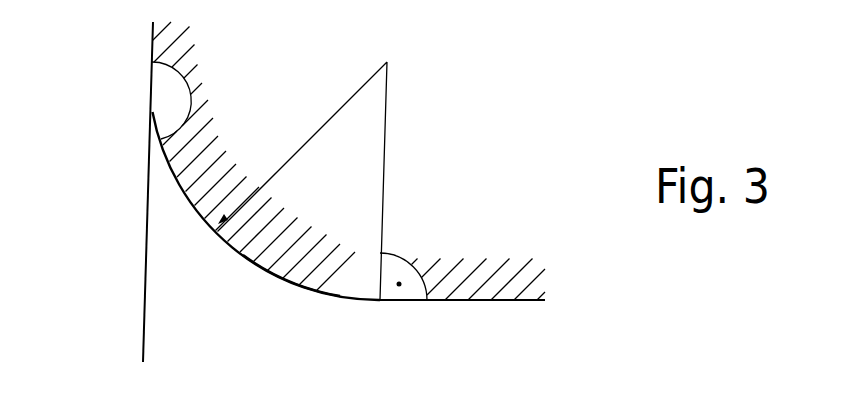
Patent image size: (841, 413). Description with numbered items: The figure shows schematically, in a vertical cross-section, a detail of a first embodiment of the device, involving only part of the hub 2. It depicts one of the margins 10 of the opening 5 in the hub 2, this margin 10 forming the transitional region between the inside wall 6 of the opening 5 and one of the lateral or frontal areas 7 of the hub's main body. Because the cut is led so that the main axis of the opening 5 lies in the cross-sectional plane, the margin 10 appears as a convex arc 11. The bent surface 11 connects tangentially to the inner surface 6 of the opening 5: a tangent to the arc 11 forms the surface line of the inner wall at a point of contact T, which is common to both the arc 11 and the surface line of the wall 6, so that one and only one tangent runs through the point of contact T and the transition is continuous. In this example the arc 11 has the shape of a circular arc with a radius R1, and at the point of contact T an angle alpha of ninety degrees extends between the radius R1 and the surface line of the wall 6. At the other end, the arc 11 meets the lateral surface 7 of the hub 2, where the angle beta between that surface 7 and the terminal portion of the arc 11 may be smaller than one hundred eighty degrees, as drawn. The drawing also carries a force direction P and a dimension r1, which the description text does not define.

The hub 2 is at (429, 88).
The opening 5 is at (540, 380).
The inside wall of the opening 6 is at (435, 301).
The lateral surface of the hub 7 is at (153, 42).
The margin of the opening 10 is at (247, 275).
The convex arc 11 is at (312, 289).
The force direction P is at (108, 131).
The angle beta is at (190, 88).
The radius R1 is at (303, 181).
The point of contact T is at (378, 303).
The angle alpha is at (408, 258).
The dimension r1 is at (490, 303).